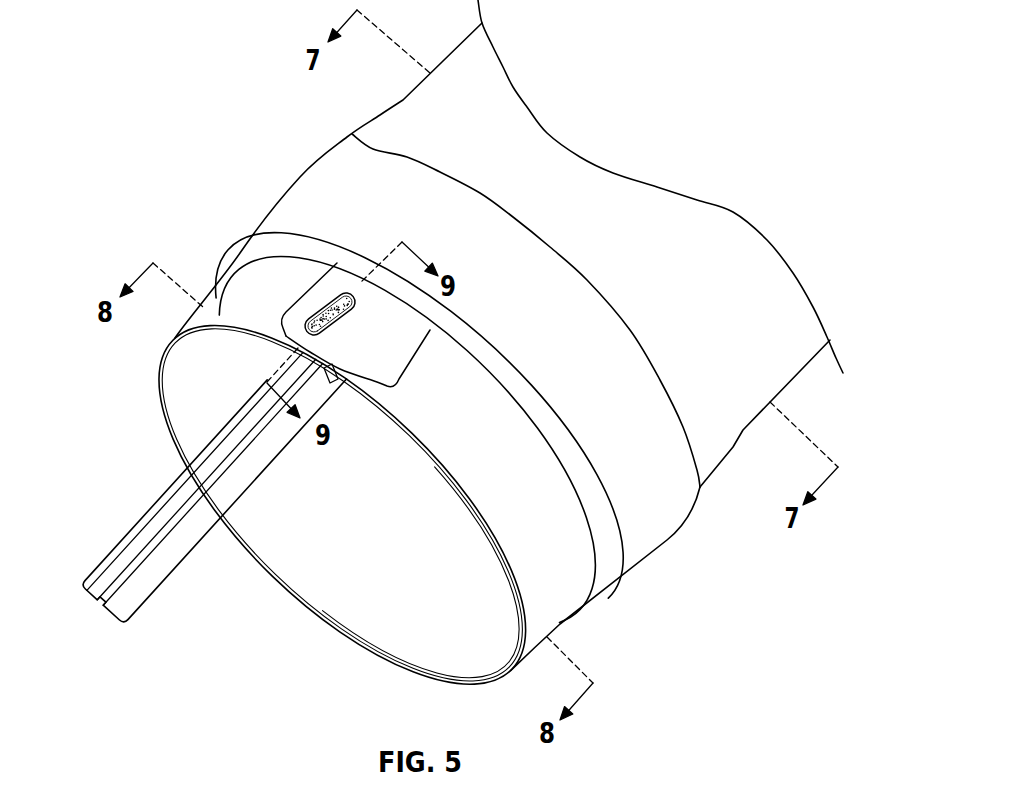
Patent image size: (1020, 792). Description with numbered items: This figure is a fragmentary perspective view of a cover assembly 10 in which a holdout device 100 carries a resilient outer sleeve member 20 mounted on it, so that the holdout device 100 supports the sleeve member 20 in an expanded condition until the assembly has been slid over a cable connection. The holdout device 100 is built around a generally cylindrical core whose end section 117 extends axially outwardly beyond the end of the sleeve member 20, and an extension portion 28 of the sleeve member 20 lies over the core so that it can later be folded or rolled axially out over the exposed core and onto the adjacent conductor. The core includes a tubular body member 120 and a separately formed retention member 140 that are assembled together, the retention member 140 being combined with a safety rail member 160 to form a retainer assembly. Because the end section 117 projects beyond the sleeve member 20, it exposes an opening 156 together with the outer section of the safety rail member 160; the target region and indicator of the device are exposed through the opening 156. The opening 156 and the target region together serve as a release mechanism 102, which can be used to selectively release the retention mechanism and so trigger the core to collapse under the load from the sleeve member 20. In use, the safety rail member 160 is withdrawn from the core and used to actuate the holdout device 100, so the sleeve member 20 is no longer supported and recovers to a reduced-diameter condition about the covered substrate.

The cover assembly 10 is at (456, 370).
The resilient outer sleeve member 20 is at (750, 445).
The extension portion 28 is at (509, 335).
The holdout device 100 is at (290, 433).
The release mechanism 102 is at (350, 272).
The end section 117 is at (433, 402).
The tubular body member 120 is at (553, 590).
The retention member 140 is at (420, 334).
The opening 156 is at (298, 341).
The safety rail member 160 is at (148, 577).